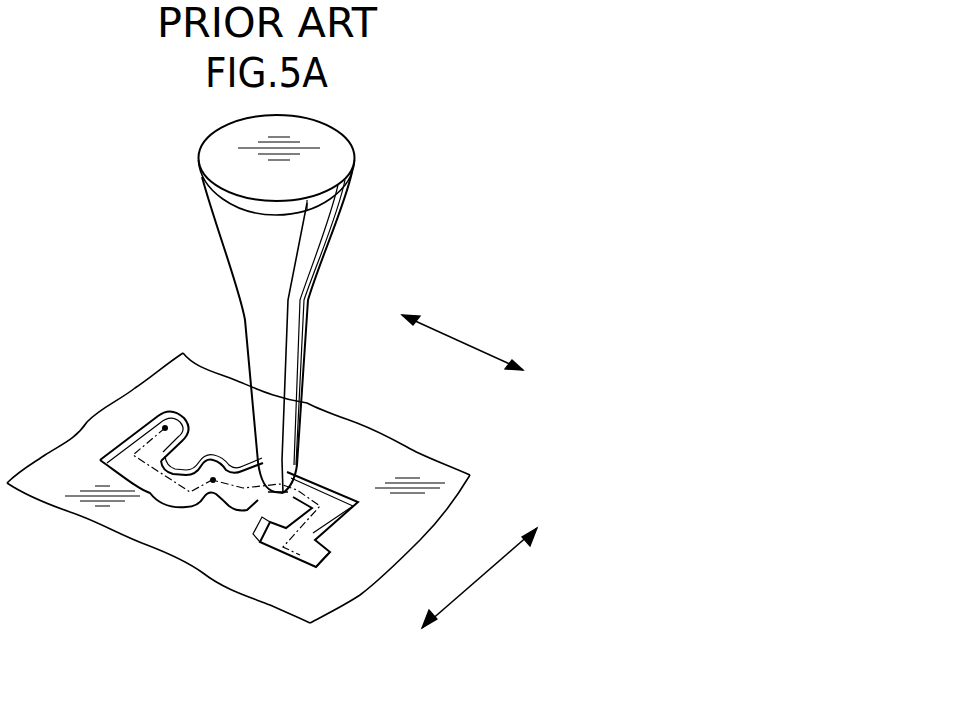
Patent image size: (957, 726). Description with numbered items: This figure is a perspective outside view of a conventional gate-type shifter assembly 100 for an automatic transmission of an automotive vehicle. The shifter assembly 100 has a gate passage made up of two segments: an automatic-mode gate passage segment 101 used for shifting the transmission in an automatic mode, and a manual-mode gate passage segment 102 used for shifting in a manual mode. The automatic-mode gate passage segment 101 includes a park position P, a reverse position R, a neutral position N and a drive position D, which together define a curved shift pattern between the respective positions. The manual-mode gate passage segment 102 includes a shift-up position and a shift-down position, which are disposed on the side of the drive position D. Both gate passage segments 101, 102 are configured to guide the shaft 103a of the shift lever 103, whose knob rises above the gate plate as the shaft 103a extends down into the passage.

The gate-type shifter assembly 100 is at (439, 208).
The automatic-mode gate passage segment 101 is at (203, 463).
The manual-mode gate passage segment 102 is at (330, 553).
The shift lever 103 is at (198, 164).
The shaft 103a is at (290, 477).